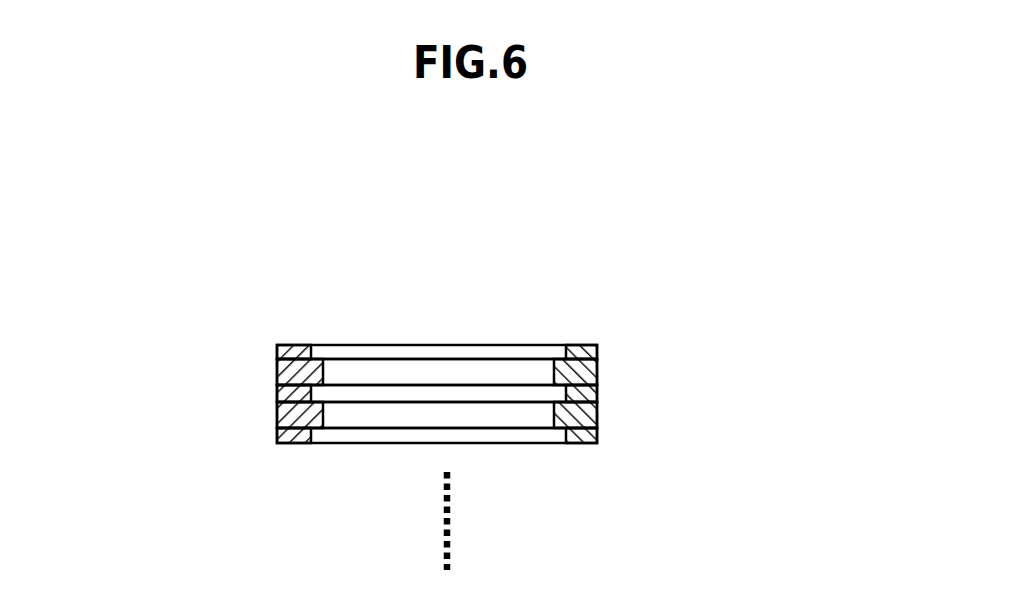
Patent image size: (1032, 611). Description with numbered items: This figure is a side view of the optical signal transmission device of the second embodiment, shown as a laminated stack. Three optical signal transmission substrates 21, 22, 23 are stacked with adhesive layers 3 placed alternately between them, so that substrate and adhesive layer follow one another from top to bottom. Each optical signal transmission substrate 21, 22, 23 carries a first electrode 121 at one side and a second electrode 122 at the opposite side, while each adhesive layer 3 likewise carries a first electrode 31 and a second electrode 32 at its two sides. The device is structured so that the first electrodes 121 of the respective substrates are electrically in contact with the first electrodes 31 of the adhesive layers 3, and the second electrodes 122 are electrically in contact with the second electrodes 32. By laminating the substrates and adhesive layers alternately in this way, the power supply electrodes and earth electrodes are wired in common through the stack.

The optical signal transmission substrate 21 is at (333, 350).
The adhesive layer 3 is at (363, 370).
The optical signal transmission substrate 22 is at (402, 393).
The optical signal transmission substrate 23 is at (463, 437).
The second electrode 122 is at (277, 347).
The second electrode 32 is at (277, 373).
The first electrode 121 is at (597, 350).
The first electrode 31 is at (597, 373).